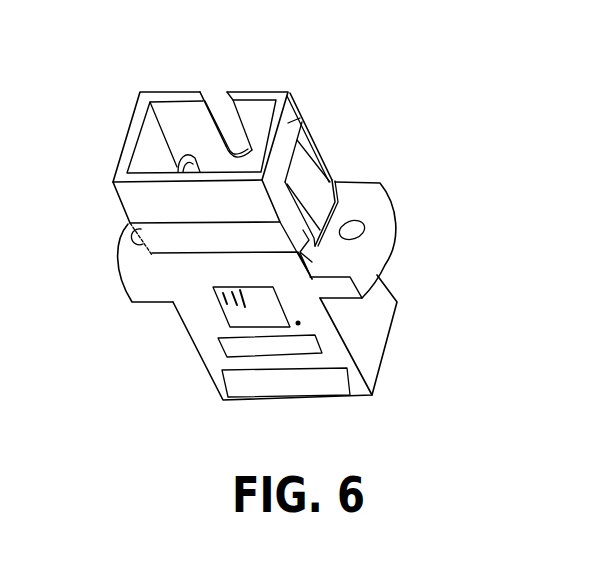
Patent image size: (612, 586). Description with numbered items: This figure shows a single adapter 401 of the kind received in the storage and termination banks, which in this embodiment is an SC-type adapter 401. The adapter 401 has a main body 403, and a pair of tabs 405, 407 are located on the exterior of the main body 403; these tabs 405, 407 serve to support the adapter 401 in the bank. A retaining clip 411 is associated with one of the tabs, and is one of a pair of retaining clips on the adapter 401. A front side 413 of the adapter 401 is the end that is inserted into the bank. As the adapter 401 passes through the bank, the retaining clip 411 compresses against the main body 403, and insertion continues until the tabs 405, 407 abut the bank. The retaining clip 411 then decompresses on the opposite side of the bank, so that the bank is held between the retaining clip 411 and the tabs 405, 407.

The adapter 401 is at (452, 78).
The main body 403 is at (372, 317).
The tab 405 is at (128, 263).
The tab 407 is at (367, 209).
The retaining clip 411 is at (318, 178).
The front side 413 is at (287, 124).